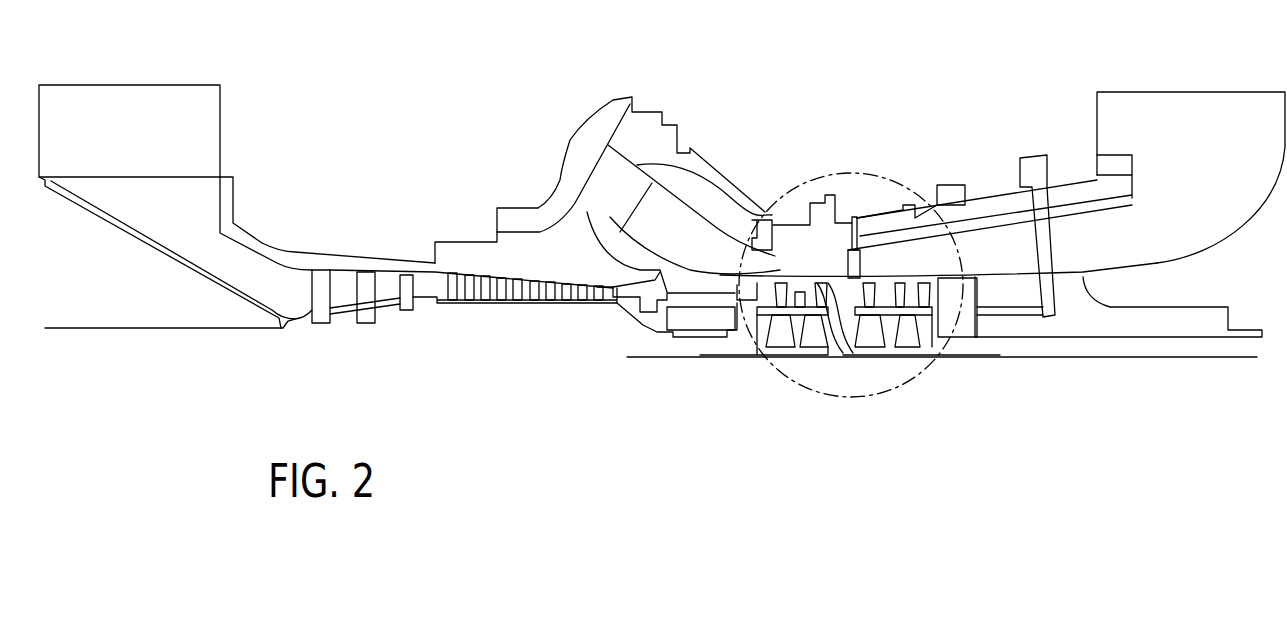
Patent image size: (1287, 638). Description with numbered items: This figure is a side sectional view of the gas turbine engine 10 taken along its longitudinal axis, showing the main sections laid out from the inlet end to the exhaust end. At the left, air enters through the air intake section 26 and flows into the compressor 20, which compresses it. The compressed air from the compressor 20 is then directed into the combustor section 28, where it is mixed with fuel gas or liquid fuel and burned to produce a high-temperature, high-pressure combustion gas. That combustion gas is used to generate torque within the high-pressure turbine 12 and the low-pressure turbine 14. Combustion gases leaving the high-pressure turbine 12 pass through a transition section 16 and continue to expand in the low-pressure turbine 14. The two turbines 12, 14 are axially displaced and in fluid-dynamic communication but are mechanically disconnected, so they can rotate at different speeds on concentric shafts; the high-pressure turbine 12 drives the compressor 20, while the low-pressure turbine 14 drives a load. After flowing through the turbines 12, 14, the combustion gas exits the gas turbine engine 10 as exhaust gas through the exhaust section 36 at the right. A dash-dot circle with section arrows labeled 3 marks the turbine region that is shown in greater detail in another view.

The gas turbine engine 10 is at (836, 51).
The high-pressure turbine 12 is at (797, 370).
The low-pressure turbine 14 is at (875, 370).
The transition section 16 is at (836, 267).
The compressor 20 is at (618, 340).
The air intake section 26 is at (200, 142).
The combustor section 28 is at (663, 67).
The exhaust section 36 is at (1222, 237).
The section line for FIG. 3 is at (743, 340).